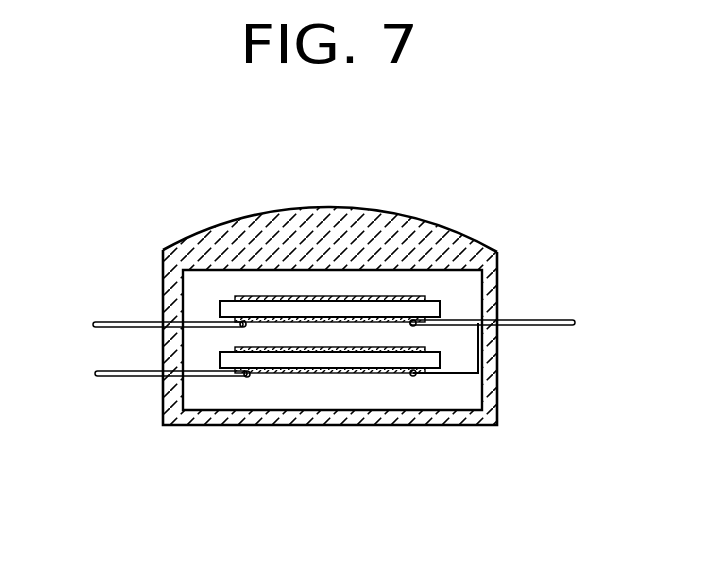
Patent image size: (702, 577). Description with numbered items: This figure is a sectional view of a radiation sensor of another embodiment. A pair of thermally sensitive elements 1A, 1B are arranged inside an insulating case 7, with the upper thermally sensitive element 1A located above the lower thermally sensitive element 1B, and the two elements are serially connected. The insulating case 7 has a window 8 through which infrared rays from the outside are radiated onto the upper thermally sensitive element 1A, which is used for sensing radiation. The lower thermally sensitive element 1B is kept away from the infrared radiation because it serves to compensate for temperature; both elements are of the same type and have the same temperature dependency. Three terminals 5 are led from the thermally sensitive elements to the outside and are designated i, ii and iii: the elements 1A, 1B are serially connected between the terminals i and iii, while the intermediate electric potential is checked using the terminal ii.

The insulating case 7 is at (492, 383).
The window 8 is at (415, 235).
The thermally sensitive element 1A is at (423, 293).
The thermally sensitive element 1B is at (378, 385).
The terminals 5 is at (122, 323).
The terminal 5- i is at (75, 317).
The terminal 5- ii is at (591, 318).
The terminal 5- iii is at (60, 373).